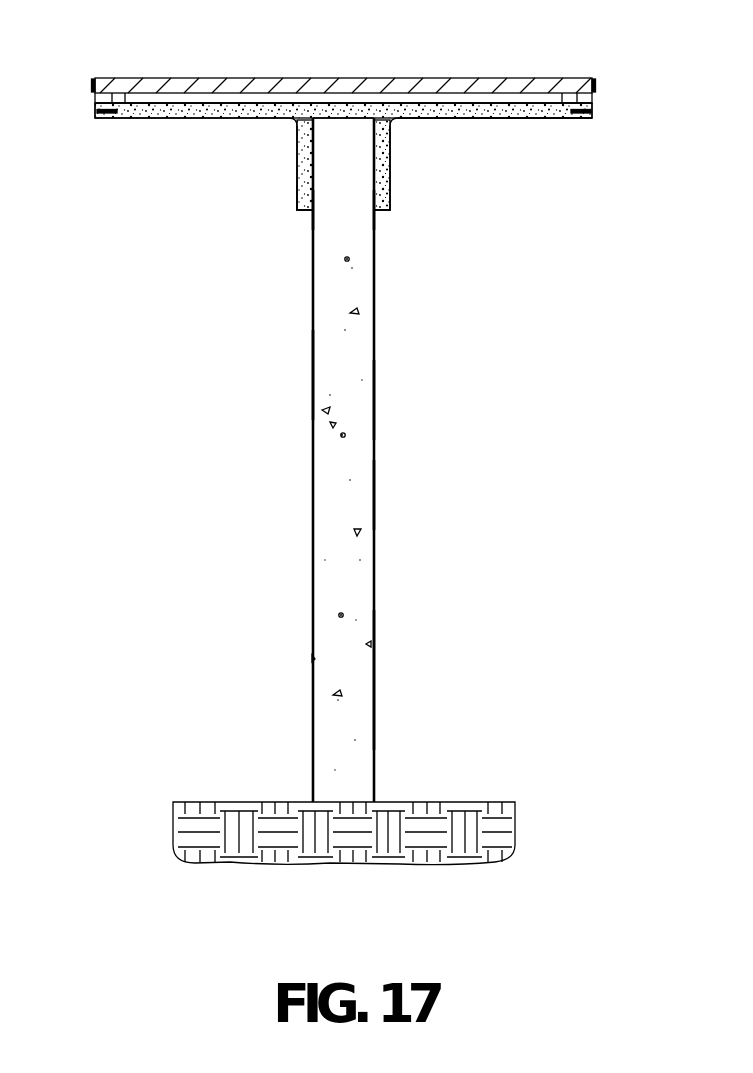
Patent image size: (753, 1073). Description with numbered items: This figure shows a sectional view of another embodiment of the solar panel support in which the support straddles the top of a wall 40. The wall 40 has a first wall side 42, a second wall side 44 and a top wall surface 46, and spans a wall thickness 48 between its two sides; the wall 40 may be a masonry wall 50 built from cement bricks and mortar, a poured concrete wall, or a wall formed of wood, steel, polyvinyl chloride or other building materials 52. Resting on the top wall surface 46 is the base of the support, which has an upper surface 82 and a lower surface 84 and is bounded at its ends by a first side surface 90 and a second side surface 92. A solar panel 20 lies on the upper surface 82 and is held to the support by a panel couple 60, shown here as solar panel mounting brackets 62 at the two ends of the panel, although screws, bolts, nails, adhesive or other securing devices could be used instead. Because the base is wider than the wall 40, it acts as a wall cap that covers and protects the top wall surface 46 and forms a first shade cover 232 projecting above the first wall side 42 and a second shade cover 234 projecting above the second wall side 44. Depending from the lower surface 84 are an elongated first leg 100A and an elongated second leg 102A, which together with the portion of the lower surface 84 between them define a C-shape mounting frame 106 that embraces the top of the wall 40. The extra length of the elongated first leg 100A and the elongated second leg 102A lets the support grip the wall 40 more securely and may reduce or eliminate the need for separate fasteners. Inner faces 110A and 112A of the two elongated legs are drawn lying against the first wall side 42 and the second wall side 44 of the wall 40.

The solar panel 20 is at (180, 78).
The upper surface 82 is at (260, 103).
The lower surface 84 is at (183, 121).
The top wall surface 46 is at (360, 118).
The solar panel mounting brackets 62 is at (93, 98).
The first side surface 90 is at (93, 117).
The second side surface 92 is at (596, 117).
The first shade cover 232 is at (113, 120).
The second shade cover 234 is at (560, 124).
The panel couple 60 is at (511, 119).
The elongated first leg 100A is at (297, 160).
The elongated second leg 102A is at (391, 159).
The C-shape mounting frame 106 is at (299, 194).
The left column wall 110A is at (316, 204).
The right column wall 112A is at (368, 205).
The wall 40 is at (376, 318).
The first wall side 42 is at (312, 368).
The second wall side 44 is at (375, 397).
The wall thickness 48 is at (375, 493).
The masonry wall 50 is at (375, 643).
The other building materials 52 is at (375, 713).